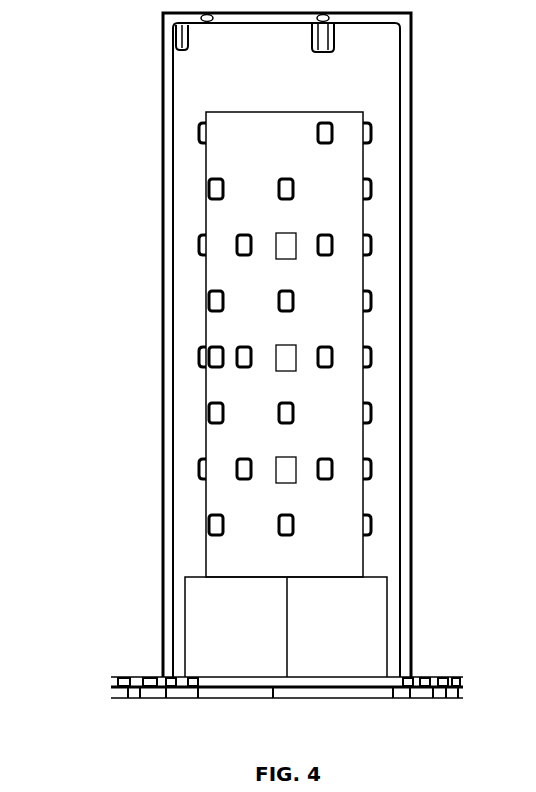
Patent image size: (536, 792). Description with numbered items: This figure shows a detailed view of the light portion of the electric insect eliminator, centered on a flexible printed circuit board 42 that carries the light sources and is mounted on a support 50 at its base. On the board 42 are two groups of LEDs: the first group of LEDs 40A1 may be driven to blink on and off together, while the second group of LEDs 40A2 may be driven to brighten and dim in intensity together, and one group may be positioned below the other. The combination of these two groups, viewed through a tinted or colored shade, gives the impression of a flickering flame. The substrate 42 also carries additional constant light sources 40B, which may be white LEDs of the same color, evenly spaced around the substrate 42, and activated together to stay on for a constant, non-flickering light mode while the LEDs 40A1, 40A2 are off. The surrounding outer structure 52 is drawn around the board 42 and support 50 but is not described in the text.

The flexible printed circuit board 42 is at (362, 137).
The outer frame 52 is at (162, 247).
The first group of LEDs 40A1 is at (295, 302).
The second group of LEDs 40A2 is at (295, 527).
The constant light sources 40B is at (276, 462).
The support 50 is at (202, 631).